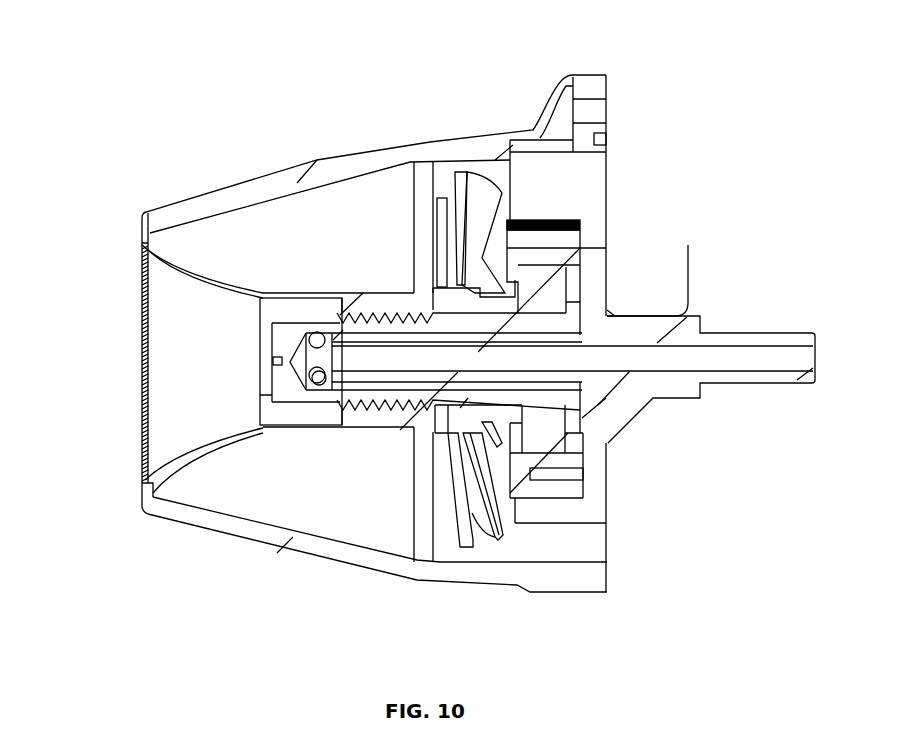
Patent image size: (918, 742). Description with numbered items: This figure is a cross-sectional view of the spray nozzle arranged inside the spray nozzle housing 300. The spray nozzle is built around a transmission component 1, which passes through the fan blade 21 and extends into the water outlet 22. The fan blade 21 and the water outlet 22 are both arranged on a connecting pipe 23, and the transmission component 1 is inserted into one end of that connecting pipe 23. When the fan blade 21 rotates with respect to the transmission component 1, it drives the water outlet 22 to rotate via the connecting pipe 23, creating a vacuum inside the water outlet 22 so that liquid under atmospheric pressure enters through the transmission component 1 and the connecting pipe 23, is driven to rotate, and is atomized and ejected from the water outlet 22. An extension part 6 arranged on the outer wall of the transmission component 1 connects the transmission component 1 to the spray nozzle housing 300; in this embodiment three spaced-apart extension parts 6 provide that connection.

The spray nozzle housing 300 is at (278, 170).
The water outlet 22 is at (143, 267).
The fan blade 21 is at (483, 175).
The connecting pipe 23 is at (467, 397).
The extension part 6 is at (580, 192).
The transmission component 1 is at (688, 303).